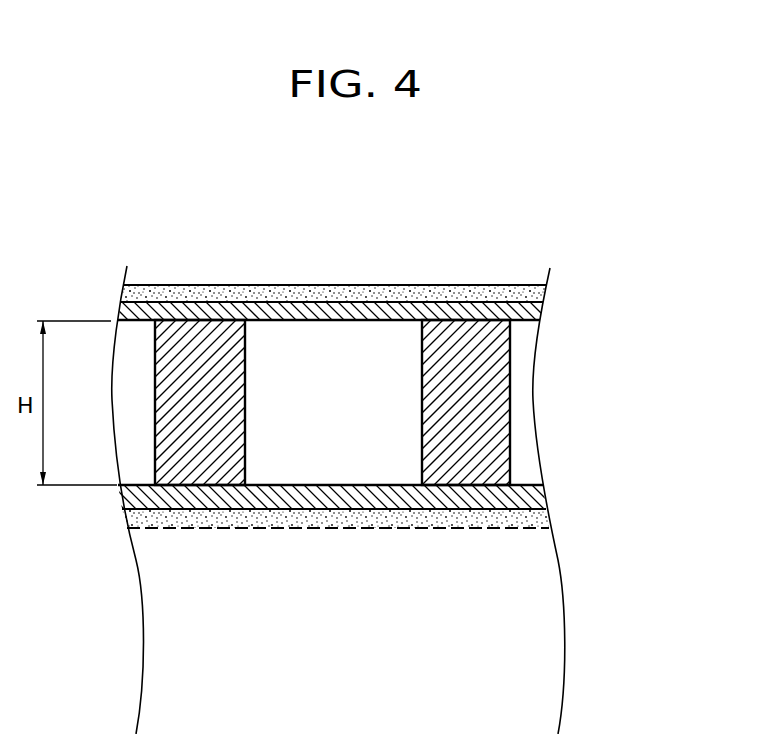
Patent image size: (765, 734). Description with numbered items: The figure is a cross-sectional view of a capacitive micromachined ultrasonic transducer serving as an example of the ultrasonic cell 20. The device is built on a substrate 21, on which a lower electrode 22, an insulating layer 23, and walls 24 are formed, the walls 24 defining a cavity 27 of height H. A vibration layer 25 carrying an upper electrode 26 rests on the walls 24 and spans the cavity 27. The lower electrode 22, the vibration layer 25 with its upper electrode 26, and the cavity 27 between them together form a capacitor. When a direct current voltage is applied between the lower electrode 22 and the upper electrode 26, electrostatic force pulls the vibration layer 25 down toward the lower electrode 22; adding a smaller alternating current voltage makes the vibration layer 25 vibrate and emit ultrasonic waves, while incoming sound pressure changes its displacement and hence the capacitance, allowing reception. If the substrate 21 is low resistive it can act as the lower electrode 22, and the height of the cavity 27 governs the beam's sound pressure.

The ultrasonic cell 20 is at (605, 252).
The substrate 21 is at (530, 650).
The lower electrode 22 is at (538, 520).
The insulating layer 23 is at (537, 502).
The walls 24 is at (495, 412).
The vibration layer 25 is at (530, 312).
The upper electrode 26 is at (530, 293).
The cavity 27 is at (330, 355).